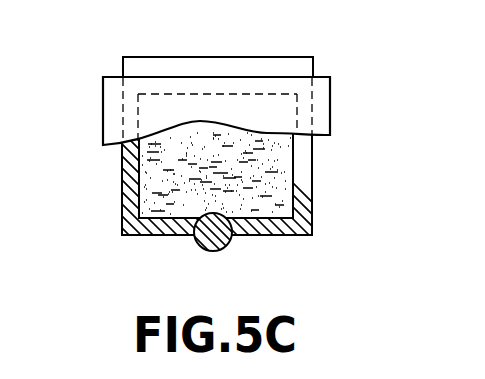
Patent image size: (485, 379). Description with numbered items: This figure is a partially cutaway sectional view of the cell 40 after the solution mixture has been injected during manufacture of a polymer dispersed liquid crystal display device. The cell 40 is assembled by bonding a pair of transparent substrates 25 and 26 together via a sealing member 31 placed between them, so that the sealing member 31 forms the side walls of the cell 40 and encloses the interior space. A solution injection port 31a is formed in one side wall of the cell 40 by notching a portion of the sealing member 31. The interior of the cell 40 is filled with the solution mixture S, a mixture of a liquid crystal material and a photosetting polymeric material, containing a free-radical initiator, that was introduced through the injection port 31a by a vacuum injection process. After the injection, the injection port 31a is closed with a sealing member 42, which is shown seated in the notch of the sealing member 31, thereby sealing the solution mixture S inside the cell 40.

The transparent substrate 25 is at (272, 70).
The transparent substrate 26 is at (170, 104).
The cell 40 is at (333, 112).
The sealing member 31 is at (307, 185).
The solution injection port 31a is at (178, 237).
The sealing member 42 is at (218, 250).
The solution mixture S is at (148, 190).